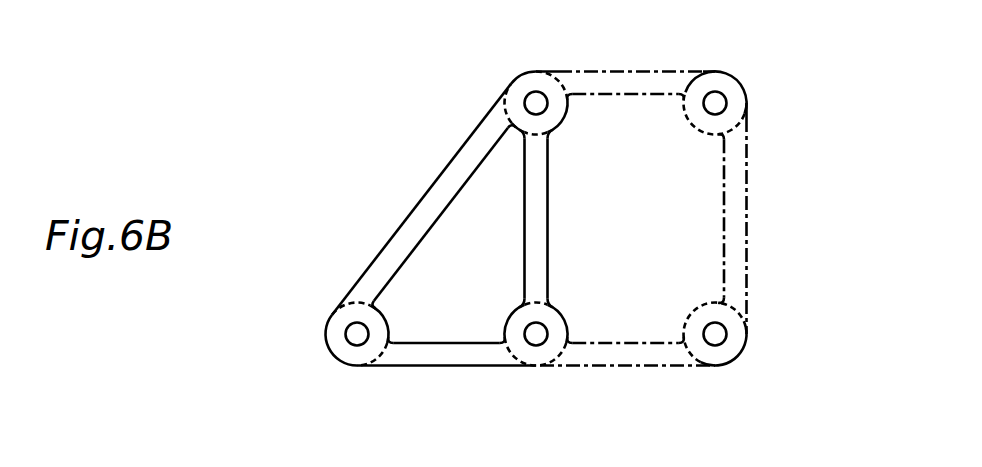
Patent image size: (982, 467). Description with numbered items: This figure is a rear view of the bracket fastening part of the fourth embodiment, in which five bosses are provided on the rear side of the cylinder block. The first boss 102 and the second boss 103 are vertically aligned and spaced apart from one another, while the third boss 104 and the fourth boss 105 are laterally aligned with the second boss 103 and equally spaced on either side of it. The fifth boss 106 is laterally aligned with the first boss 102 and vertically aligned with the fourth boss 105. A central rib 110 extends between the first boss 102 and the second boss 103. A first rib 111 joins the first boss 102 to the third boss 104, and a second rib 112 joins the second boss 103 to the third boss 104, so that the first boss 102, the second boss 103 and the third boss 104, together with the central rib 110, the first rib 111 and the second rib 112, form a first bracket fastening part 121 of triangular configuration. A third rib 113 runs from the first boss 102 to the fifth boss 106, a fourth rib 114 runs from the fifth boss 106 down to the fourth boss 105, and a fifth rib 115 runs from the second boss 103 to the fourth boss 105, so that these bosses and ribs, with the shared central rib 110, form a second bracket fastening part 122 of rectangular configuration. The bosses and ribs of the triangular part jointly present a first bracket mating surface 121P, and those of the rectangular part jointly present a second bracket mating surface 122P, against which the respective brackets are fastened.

The first boss 102 is at (534, 86).
The second boss 103 is at (544, 352).
The third boss 104 is at (356, 374).
The fourth boss 105 is at (735, 363).
The fifth boss 106 is at (744, 84).
The central rib 110 is at (542, 222).
The first rib 111 is at (463, 158).
The second rib 112 is at (446, 356).
The third rib 113 is at (620, 70).
The fourth rib 114 is at (748, 272).
The fifth rib 115 is at (628, 341).
The first bracket fastening part 121 is at (465, 264).
The first bracket mating surface 121P is at (372, 350).
The second bracket fastening part 122 is at (694, 212).
The second bracket mating surface 122P is at (705, 352).